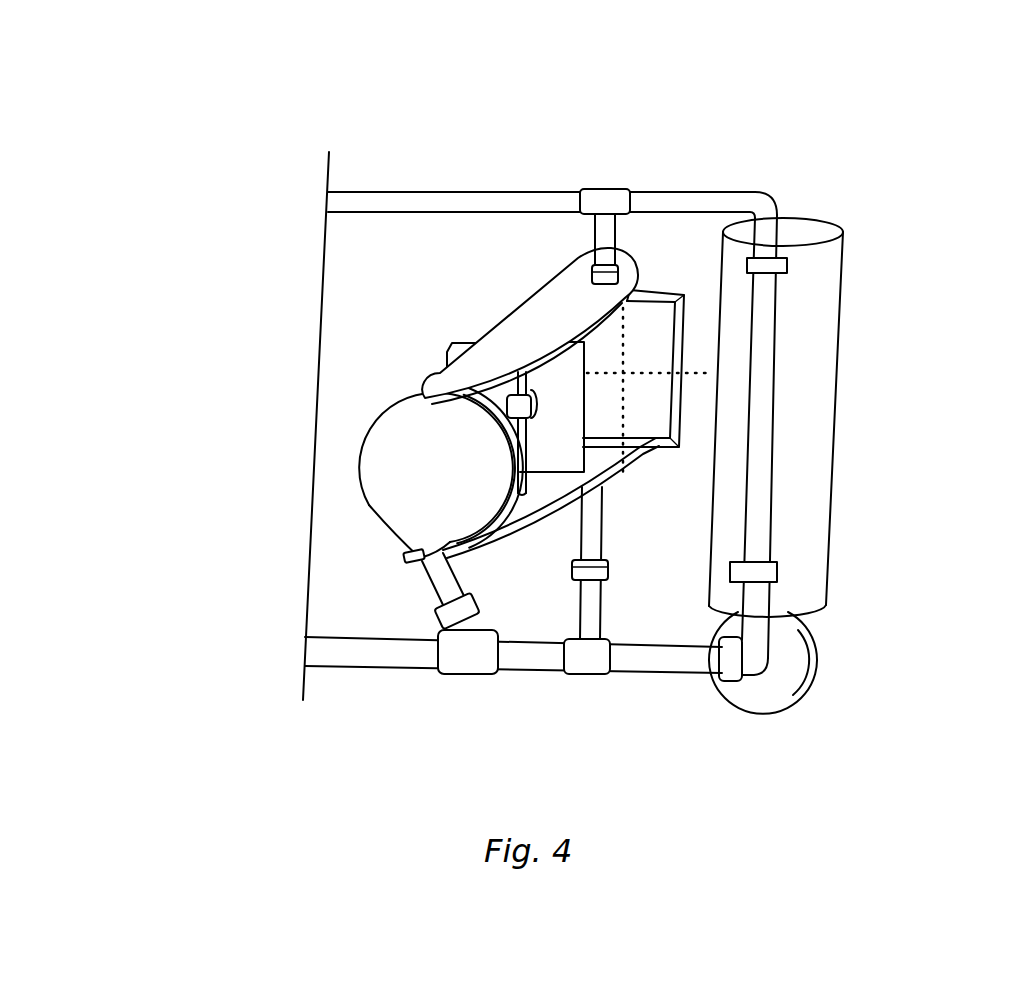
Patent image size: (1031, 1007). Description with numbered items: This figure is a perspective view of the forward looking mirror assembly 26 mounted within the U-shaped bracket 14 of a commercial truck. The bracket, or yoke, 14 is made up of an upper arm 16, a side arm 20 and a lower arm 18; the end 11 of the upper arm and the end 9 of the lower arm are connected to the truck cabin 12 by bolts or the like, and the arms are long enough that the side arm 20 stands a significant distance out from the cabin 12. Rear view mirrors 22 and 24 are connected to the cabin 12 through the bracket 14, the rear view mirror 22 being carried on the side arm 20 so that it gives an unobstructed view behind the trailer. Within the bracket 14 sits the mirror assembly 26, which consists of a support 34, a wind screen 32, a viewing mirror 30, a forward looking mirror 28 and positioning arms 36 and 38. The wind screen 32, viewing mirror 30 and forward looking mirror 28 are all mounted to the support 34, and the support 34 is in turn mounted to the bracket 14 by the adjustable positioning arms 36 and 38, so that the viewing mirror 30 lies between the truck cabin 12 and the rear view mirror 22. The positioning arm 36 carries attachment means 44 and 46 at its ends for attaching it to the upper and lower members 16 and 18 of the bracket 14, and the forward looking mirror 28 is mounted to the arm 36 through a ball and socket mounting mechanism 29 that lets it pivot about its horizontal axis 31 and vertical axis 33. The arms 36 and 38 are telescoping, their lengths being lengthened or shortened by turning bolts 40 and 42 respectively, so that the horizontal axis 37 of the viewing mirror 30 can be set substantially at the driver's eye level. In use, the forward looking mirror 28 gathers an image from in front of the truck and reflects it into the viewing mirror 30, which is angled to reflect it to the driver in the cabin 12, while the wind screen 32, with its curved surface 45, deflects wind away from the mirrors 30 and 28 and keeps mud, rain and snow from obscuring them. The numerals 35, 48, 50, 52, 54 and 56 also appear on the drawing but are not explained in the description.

The end of lower arm 9 is at (323, 658).
The end of upper arm 11 is at (338, 198).
The truck cabin 12 is at (295, 195).
The U-shaped bracket 14 is at (777, 200).
The upper arm 16 is at (535, 193).
The lower arm 18 is at (725, 683).
The side arm 20 is at (753, 610).
The rear view mirror 22 is at (837, 247).
The rear view mirror 24 is at (787, 678).
The forward looking mirror assembly 26 is at (382, 376).
The forward looking mirror 28 is at (655, 317).
The mounting mechanism 29 is at (680, 310).
The viewing mirror 30 is at (573, 363).
The horizontal axis 31 is at (670, 374).
The wind screen 32 is at (385, 512).
The vertical axis 33 is at (623, 477).
The support 34 is at (537, 305).
The arm edge 35 is at (515, 322).
The positioning arm 36 is at (598, 518).
The horizontal axis 37 is at (560, 502).
The positioning arm 38 is at (442, 633).
The bolt 40 is at (577, 572).
The bolt 42 is at (440, 590).
The attachment means 44 is at (605, 198).
The curved surface 45 is at (417, 465).
The attachment means 46 is at (588, 667).
The tee fitting 48 is at (455, 672).
The bolt 50 is at (578, 405).
The nut 52 is at (620, 263).
The coupling 54 is at (410, 556).
The curved strap 56 is at (640, 452).